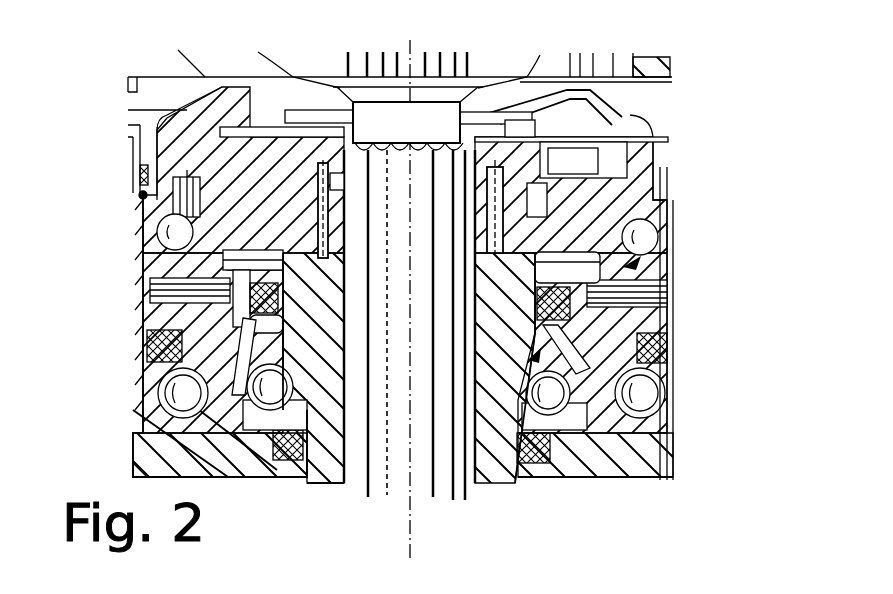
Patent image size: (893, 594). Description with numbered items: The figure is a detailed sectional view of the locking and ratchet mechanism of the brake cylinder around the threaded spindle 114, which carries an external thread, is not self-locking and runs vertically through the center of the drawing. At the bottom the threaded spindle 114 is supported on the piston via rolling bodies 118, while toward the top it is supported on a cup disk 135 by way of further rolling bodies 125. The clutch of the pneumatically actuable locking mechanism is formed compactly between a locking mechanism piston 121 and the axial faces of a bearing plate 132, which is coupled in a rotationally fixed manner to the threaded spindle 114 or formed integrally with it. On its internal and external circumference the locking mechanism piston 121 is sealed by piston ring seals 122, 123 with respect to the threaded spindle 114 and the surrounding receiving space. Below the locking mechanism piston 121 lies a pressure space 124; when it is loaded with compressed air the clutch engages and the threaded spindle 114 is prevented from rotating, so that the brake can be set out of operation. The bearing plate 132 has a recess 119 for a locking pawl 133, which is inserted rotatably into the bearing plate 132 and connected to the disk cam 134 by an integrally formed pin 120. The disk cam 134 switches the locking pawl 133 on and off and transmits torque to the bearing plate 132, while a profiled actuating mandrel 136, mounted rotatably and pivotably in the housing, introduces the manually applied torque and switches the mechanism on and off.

The threaded spindle 114 is at (668, 378).
The rolling bodies 118 is at (548, 395).
The recess 119 is at (655, 256).
The integrally formed pin 120 is at (570, 157).
The locking mechanism piston 121 is at (648, 323).
The piston ring seal 122 is at (533, 353).
The piston ring seal 123 is at (145, 347).
The pressure space 124 is at (590, 402).
The rolling bodies 125 is at (645, 240).
The bearing plate 132 is at (648, 276).
The locking pawl 133 is at (648, 219).
The disk cam 134 is at (660, 164).
The cup disk 135 is at (622, 114).
The actuating mandrel 136 is at (455, 120).